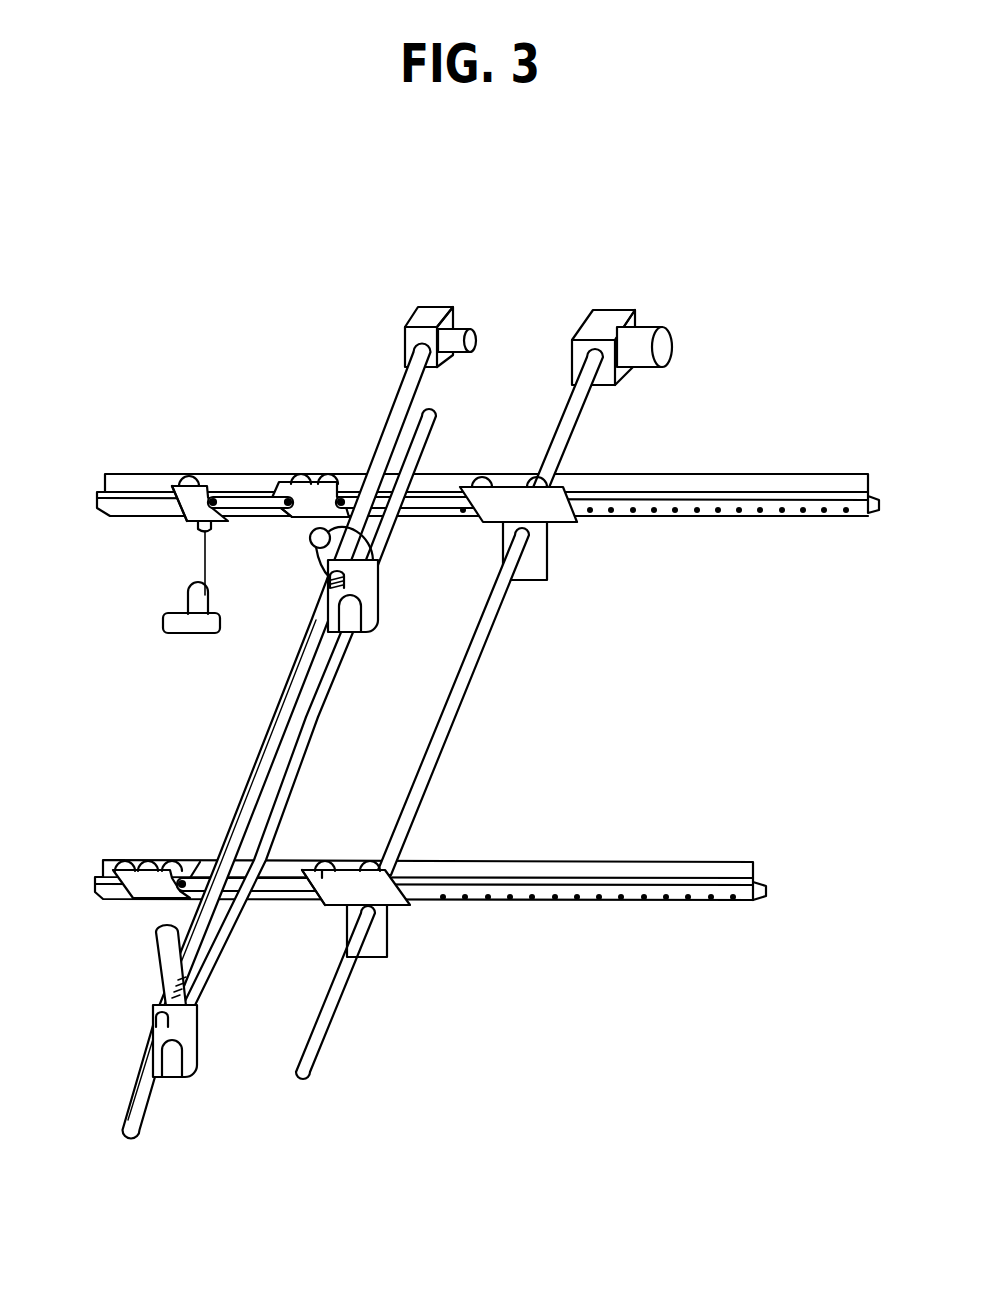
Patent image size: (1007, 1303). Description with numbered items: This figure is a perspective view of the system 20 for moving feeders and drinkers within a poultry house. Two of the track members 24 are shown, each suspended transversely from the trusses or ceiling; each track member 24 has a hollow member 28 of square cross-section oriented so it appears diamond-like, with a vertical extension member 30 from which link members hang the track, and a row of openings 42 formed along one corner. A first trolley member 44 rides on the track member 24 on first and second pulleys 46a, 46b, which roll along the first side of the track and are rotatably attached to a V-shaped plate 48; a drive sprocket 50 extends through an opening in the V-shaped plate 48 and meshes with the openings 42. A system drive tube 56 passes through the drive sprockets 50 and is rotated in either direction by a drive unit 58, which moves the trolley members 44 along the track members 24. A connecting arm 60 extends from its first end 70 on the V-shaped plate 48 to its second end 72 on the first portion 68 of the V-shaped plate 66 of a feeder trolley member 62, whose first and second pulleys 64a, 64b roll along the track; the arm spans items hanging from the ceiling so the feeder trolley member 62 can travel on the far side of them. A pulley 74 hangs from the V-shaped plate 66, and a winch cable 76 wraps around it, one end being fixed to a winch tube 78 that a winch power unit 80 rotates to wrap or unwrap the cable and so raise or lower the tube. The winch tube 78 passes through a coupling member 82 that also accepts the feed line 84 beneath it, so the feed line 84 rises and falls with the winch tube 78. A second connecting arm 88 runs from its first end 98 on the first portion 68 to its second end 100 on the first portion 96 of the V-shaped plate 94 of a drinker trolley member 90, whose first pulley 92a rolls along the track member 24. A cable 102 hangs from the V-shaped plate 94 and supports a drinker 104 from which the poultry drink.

The system 20 is at (594, 250).
The track member 24 is at (847, 513).
The hollow member 28 is at (747, 898).
The extension member 30 is at (733, 868).
The openings 42 is at (706, 512).
The first trolley member 44 is at (558, 517).
The first pulley 46a is at (392, 862).
The second pulley 46b is at (333, 860).
The V-shaped plate 48 is at (402, 905).
The drive sprocket 50 is at (556, 524).
The system drive tube 56 is at (463, 682).
The drive unit 58 is at (618, 305).
The connecting arm 60 is at (440, 495).
The feeder trolley member 62 is at (347, 480).
The first pulley 64a is at (160, 860).
The second pulley 64b is at (123, 860).
The V-shaped plate 66 is at (306, 512).
The first portion 68 is at (142, 893).
The first end 70 is at (317, 907).
The second end 72 is at (203, 860).
The pulley 74 is at (156, 968).
The winch cable 76 is at (156, 1005).
The winch tube 78 is at (272, 727).
The winch power unit 80 is at (435, 305).
The coupling member 82 is at (365, 590).
The feed line 84 is at (307, 717).
The connecting arm 88 is at (248, 497).
The drinker trolley member 90 is at (172, 486).
The first pulley 92a is at (187, 478).
The V-shaped plate 94 is at (180, 520).
The first portion 96 is at (172, 505).
The first end 98 is at (293, 482).
The second end 100 is at (212, 486).
The cable 102 is at (203, 567).
The drinker 104 is at (170, 630).